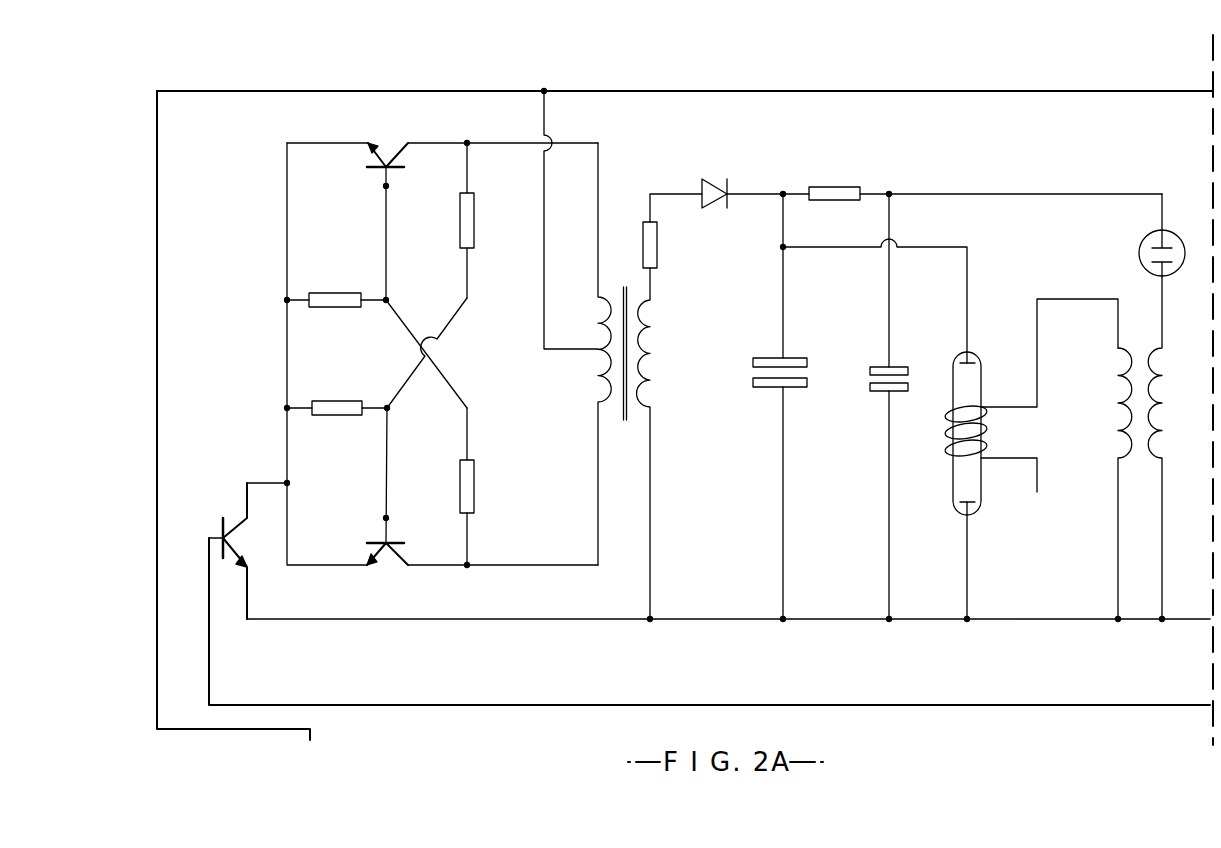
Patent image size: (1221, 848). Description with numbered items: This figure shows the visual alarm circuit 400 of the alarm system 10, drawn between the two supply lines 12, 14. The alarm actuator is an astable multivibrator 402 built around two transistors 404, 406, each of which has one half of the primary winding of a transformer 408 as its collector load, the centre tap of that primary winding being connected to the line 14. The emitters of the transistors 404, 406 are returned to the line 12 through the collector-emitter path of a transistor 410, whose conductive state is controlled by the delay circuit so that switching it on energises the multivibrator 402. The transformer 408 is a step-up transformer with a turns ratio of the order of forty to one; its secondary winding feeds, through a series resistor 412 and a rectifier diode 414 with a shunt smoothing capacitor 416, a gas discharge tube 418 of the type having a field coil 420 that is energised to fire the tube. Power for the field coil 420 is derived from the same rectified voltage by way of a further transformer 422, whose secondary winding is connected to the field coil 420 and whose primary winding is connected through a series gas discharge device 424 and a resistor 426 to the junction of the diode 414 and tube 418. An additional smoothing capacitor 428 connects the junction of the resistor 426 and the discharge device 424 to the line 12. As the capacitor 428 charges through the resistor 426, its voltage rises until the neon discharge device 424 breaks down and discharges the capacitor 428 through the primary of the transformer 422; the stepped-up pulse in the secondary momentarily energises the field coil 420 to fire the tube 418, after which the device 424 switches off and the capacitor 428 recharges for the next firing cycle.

The alarm system 10 is at (150, 540).
The supply line 12 is at (905, 621).
The supply line 14 is at (447, 90).
The visual alarm circuit 400 is at (830, 90).
The astable multivibrator 402 is at (271, 226).
The transistor 404 is at (388, 170).
The transistor 406 is at (392, 543).
The transformer 408 is at (598, 376).
The transistor 410 is at (222, 530).
The series resistor 412 is at (652, 257).
The rectifier diode 414 is at (727, 188).
The shunt smoothing capacitor 416 is at (776, 390).
The gas discharge tube 418 is at (948, 365).
The field coil 420 is at (987, 432).
The transformer 422 is at (1158, 404).
The gas discharge device 424 is at (1142, 256).
The resistor 426 is at (840, 187).
The smoothing capacitor 428 is at (880, 392).